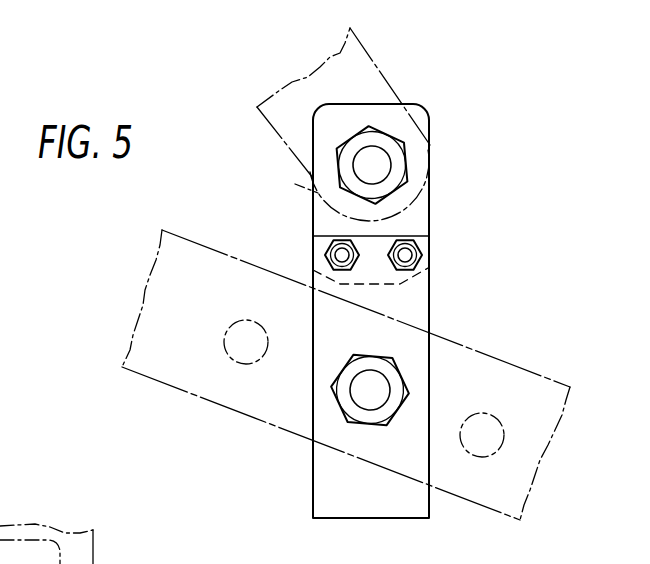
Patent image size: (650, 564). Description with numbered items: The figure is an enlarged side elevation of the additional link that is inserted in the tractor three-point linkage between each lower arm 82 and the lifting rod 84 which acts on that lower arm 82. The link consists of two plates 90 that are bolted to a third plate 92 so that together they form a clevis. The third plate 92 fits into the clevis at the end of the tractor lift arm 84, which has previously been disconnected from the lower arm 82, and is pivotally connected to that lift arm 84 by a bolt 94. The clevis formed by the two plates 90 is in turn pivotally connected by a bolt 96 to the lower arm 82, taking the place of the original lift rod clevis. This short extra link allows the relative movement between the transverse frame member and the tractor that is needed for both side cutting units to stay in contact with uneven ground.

The lower arm 82 is at (473, 497).
The lifting rod 84 is at (290, 140).
The plate 90 is at (416, 305).
The third plate 92 is at (418, 215).
The bolt 94 is at (358, 163).
The bolt 96 is at (358, 385).